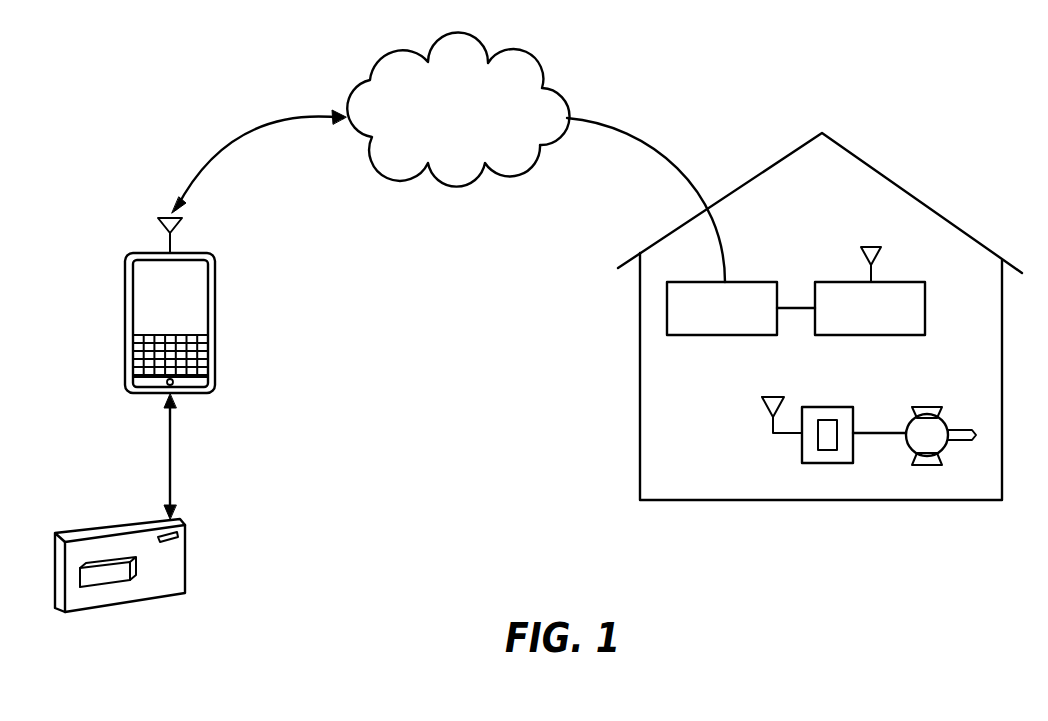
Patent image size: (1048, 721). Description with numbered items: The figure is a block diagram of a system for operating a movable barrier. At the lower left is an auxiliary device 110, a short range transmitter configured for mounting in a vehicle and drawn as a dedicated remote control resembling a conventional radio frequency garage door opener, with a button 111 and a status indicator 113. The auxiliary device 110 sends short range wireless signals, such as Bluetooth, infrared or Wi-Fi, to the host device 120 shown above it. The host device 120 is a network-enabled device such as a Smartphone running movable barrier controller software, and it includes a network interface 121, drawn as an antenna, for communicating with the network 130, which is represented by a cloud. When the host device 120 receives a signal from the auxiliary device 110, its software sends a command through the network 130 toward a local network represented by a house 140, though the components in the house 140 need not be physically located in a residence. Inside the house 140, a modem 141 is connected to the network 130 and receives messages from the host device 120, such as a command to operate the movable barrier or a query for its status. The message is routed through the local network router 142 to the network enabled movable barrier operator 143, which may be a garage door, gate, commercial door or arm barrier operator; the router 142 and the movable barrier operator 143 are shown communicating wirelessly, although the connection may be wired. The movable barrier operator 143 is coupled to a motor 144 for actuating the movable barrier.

The auxiliary device 110 is at (123, 530).
The button 111 is at (108, 573).
The status indicator 113 is at (173, 542).
The host device 120 is at (126, 324).
The network interface 121 is at (158, 230).
The network 130 is at (388, 54).
The house 140 is at (915, 200).
The modem 141 is at (757, 281).
The local network router 142 is at (905, 281).
The movable barrier operator 143 is at (830, 406).
The motor 144 is at (927, 406).